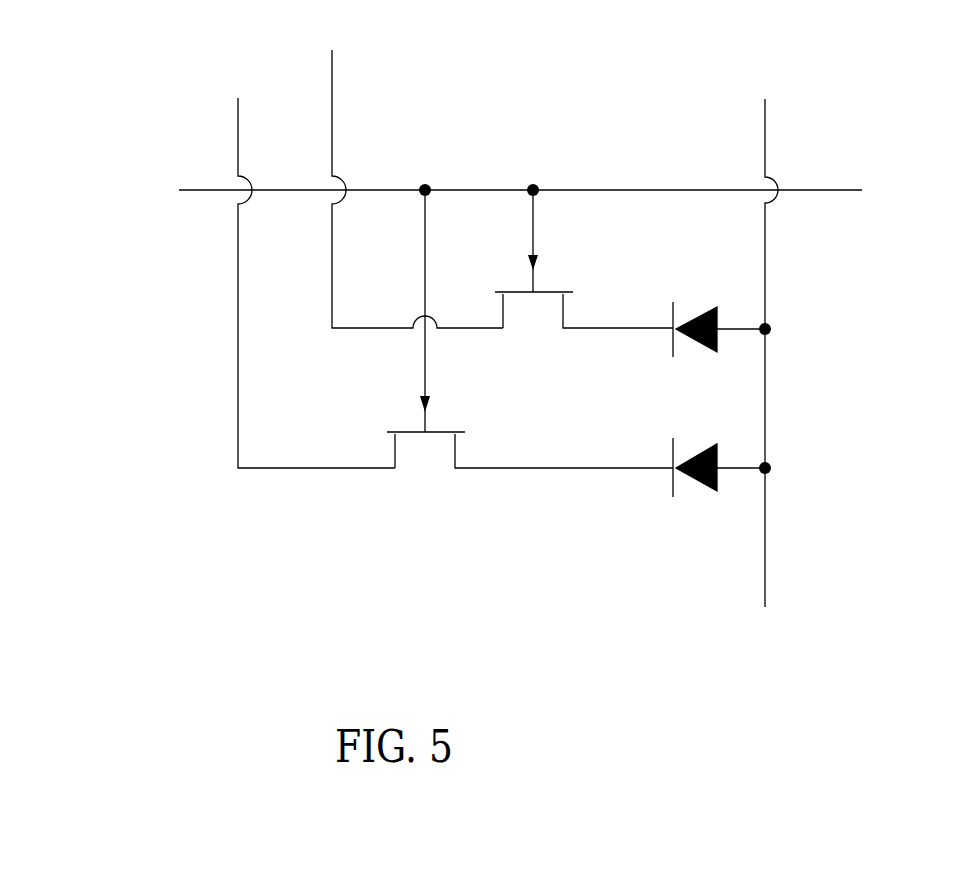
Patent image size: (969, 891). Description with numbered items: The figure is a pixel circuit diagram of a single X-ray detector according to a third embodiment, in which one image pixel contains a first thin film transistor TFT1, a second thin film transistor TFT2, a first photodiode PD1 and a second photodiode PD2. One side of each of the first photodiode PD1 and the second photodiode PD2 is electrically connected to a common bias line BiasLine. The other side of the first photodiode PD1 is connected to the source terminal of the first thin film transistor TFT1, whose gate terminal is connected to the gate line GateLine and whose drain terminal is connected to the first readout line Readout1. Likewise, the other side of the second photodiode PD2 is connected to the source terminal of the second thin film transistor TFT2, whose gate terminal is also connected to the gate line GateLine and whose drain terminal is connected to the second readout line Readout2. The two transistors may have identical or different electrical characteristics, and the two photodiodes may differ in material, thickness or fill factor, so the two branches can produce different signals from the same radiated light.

The gate line GateLine is at (448, 190).
The first readout line Readout1 is at (281, 265).
The second readout line Readout2 is at (371, 170).
The bias line BiasLine is at (765, 335).
The first thin film transistor TFT1 is at (530, 353).
The second thin film transistor TFT2 is at (584, 282).
The first photodiode PD1 is at (708, 487).
The second photodiode PD2 is at (708, 349).